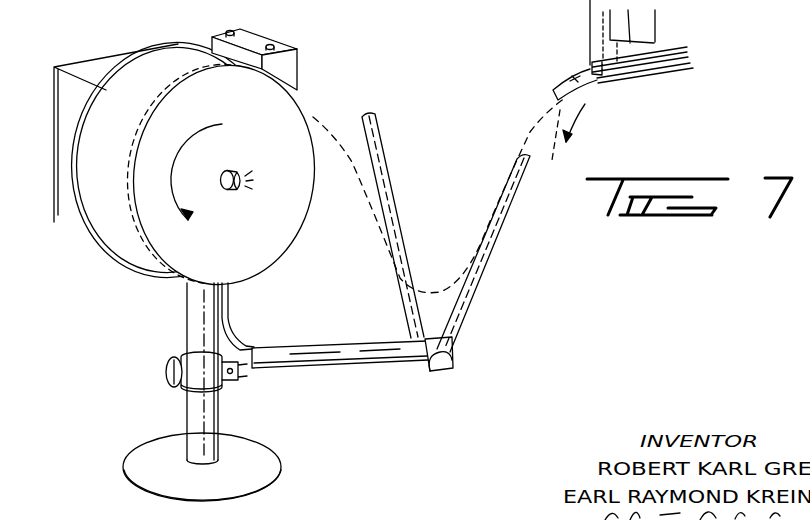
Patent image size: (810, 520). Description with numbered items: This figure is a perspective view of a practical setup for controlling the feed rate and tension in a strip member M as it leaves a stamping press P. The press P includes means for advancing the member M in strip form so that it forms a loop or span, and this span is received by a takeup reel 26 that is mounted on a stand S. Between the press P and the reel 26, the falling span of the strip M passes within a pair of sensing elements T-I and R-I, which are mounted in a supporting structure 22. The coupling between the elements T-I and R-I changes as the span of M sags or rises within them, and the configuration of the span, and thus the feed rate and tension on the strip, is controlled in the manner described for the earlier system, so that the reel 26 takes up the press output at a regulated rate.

The takeup reel 26 is at (108, 233).
The stand S is at (192, 433).
The supporting structure 22 is at (447, 362).
The sensing element R-I is at (396, 209).
The sensing element T-I is at (519, 157).
The member M is at (354, 150).
The stamping press P is at (556, 71).